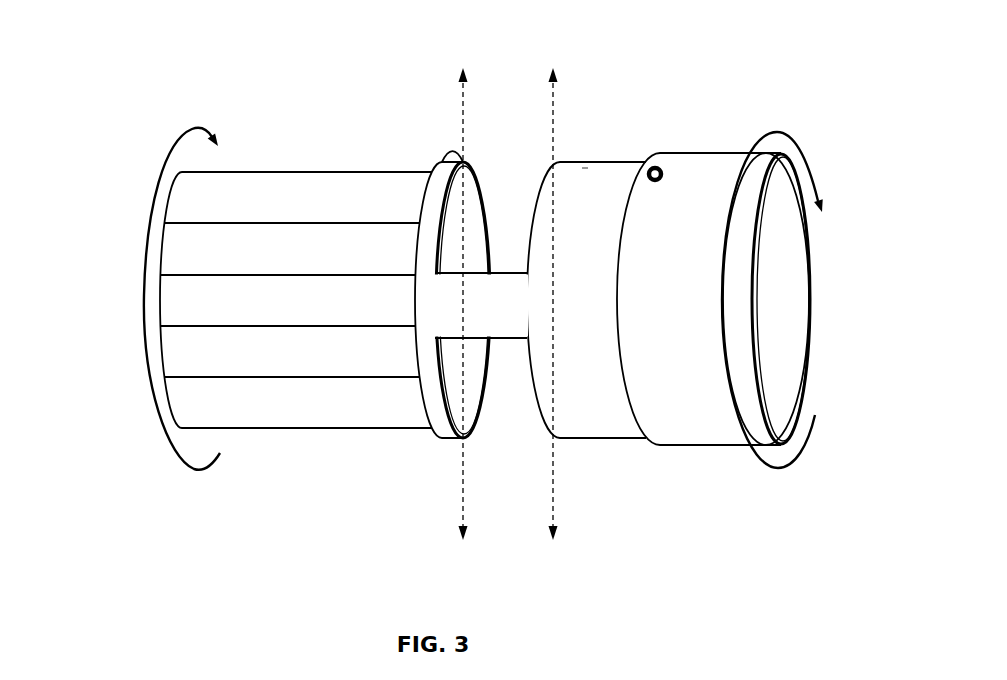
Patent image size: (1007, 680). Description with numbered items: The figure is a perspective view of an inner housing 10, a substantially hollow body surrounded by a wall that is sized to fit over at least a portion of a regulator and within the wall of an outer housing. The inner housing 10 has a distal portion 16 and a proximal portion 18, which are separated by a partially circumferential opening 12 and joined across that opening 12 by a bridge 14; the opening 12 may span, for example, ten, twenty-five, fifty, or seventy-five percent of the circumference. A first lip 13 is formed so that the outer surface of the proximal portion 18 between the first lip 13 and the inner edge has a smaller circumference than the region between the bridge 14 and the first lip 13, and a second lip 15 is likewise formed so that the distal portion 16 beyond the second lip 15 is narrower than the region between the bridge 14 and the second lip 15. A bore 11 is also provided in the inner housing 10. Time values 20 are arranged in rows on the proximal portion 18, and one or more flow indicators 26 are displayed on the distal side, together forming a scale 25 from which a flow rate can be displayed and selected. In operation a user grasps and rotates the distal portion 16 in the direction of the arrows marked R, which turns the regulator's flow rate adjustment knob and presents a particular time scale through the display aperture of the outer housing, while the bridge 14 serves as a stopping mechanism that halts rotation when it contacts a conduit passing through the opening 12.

The inner housing 10 is at (154, 44).
The bore 11 is at (655, 166).
The opening 12 is at (489, 410).
The first lip 13 is at (449, 146).
The bridge 14 is at (523, 312).
The second lip 15 is at (624, 148).
The distal portion 16 is at (729, 463).
The proximal portion 18 is at (237, 466).
The time values 20 is at (137, 194).
The scale 25 is at (622, 440).
The flow indicators 26 is at (563, 211).